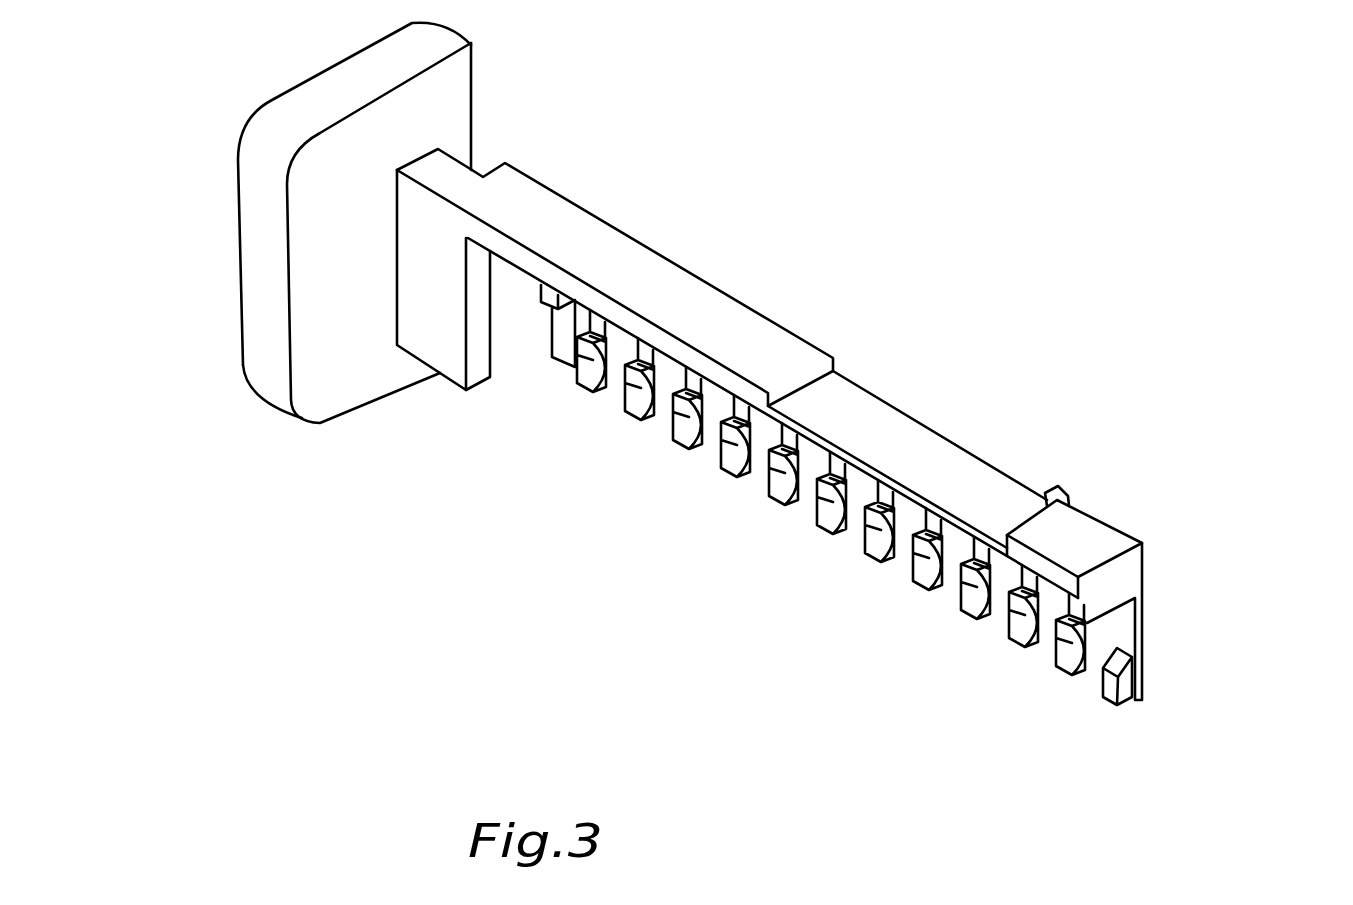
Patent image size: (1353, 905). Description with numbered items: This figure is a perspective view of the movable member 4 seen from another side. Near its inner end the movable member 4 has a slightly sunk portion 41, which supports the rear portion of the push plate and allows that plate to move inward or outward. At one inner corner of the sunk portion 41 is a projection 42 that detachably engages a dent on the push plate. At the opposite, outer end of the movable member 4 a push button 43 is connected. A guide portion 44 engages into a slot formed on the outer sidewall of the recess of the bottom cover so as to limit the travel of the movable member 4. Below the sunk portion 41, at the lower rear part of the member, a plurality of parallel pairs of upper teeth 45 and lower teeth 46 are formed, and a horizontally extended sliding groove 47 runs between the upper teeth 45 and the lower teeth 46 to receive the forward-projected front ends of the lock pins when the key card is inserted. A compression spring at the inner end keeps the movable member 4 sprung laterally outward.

The movable member 4 is at (657, 270).
The sunk portion 41 is at (888, 420).
The projection 42 is at (1053, 493).
The push button 43 is at (278, 393).
The guide portion 44 is at (453, 377).
The upper teeth 45 is at (1143, 592).
The lower teeth 46 is at (1112, 706).
The sliding groove 47 is at (1098, 647).